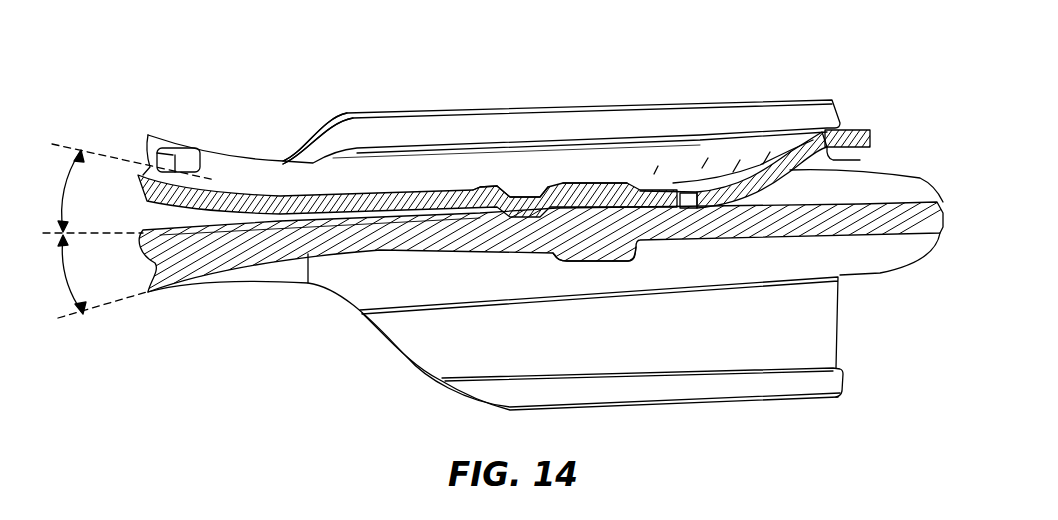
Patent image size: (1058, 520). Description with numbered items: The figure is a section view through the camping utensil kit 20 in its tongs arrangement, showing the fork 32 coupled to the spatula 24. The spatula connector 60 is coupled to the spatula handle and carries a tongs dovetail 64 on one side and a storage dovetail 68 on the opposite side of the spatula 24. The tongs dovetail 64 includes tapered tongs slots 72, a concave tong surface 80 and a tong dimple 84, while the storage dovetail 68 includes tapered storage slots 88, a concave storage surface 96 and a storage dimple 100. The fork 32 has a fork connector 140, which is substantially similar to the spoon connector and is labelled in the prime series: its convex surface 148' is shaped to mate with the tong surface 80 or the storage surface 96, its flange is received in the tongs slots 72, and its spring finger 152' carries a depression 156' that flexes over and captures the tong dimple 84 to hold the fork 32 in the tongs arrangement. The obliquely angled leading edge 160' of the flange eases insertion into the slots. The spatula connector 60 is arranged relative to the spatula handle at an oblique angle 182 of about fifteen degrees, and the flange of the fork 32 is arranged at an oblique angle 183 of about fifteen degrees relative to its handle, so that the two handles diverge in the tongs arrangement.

The camping utensil kit 20 is at (245, 383).
The spatula 24 is at (237, 262).
The fork 32 is at (231, 192).
The spatula connector 60 is at (403, 357).
The tongs dovetail 64 is at (733, 117).
The storage dovetail 68 is at (757, 383).
The tongs slots 72 is at (832, 158).
The concave tong surface 80 is at (898, 183).
The tong dimple 84 is at (555, 203).
The storage slots 88 is at (797, 327).
The concave storage surface 96 is at (893, 250).
The storage dimple 100 is at (596, 262).
The fork connector 140 is at (740, 157).
The convex surface 148' is at (726, 129).
The finger 152' is at (458, 123).
The depression 156' is at (595, 116).
The leading edge 160' is at (316, 124).
The oblique angle 182 is at (73, 272).
The oblique angle 183 is at (73, 188).